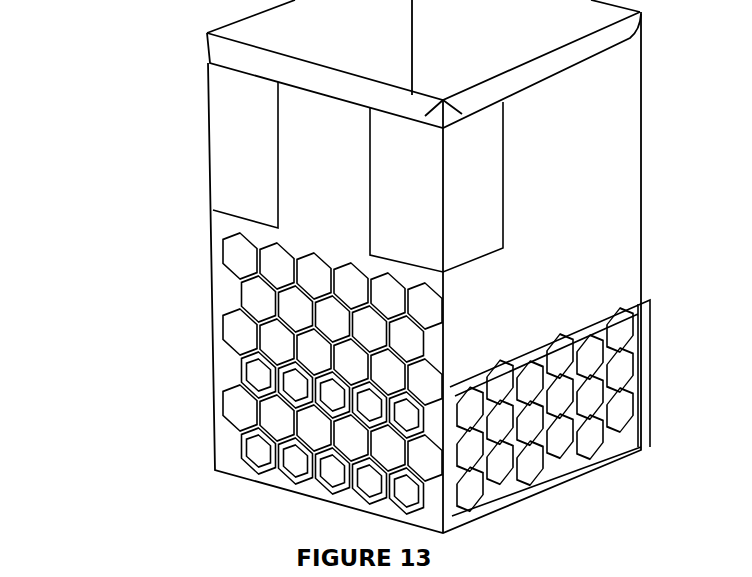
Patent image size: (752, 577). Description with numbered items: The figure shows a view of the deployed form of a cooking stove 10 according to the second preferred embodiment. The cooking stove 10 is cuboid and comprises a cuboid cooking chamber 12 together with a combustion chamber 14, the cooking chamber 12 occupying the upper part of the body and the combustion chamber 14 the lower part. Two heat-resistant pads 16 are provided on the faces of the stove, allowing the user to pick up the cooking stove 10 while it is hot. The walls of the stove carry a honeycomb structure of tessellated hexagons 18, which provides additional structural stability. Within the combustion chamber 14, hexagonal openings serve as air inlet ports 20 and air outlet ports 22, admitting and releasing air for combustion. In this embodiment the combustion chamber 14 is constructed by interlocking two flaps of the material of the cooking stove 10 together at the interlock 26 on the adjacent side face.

The cooking stove 10 is at (92, 50).
The cooking chamber 12 is at (645, 178).
The combustion chamber 14 is at (652, 376).
The heat-resistant pad 16 is at (214, 147).
The honeycomb structure of tessellated hexagons 18 is at (242, 293).
The air inlet port 20 is at (243, 449).
The air outlet port 22 is at (245, 374).
The interlock 26 is at (548, 381).